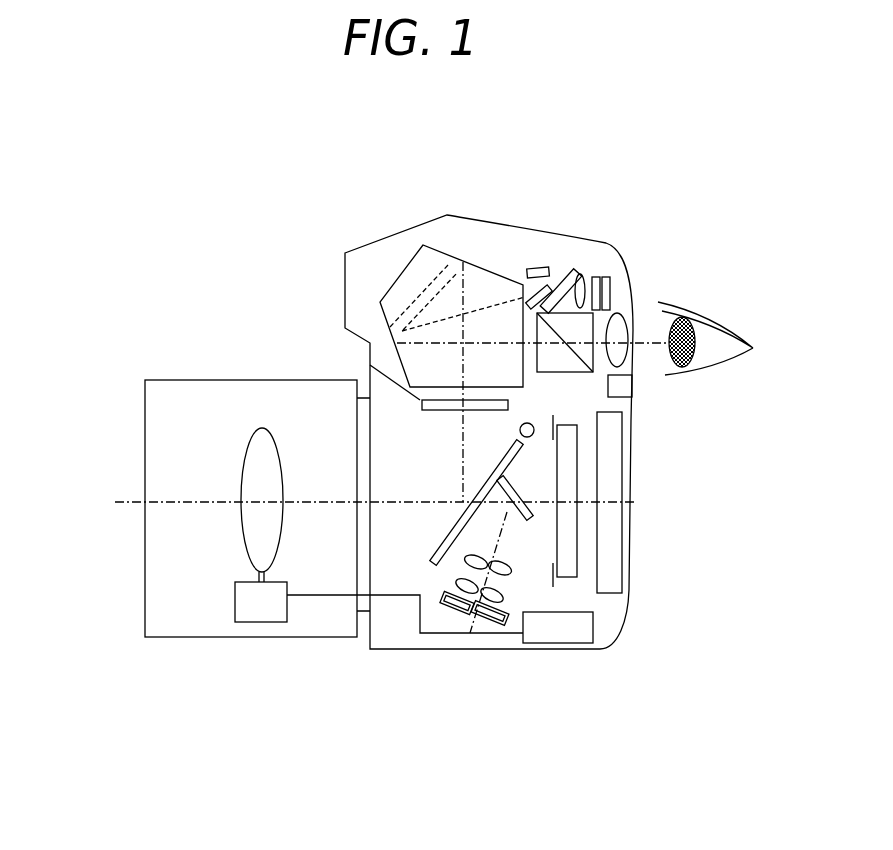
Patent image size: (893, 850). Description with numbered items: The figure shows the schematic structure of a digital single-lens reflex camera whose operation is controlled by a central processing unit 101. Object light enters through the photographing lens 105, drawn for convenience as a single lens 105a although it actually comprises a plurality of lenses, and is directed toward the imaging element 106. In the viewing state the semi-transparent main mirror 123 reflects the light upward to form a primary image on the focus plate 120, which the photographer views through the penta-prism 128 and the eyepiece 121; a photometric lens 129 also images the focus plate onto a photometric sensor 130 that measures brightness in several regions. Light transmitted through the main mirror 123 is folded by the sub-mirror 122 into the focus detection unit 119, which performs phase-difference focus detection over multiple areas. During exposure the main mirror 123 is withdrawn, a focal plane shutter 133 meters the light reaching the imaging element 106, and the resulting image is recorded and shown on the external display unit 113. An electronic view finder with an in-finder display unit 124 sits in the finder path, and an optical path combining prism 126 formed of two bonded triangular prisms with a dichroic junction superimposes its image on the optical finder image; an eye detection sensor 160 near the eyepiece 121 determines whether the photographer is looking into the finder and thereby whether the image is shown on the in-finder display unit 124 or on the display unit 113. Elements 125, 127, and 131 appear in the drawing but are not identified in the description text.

The central processing unit 101 is at (567, 630).
The photographing lens 105 is at (207, 380).
The single lens 105a is at (262, 464).
The imaging element 106 is at (567, 537).
The display unit 113 is at (612, 522).
The focus detection unit 119 is at (482, 633).
The focus plate 120 is at (370, 367).
The eyepiece 121 is at (637, 317).
The sub-mirror 122 is at (530, 510).
The main mirror 123 is at (448, 630).
The in-finder display unit 124 is at (613, 292).
The relay lens 125 is at (580, 277).
The optical path combining prism 126 is at (590, 372).
The mirror 127 is at (567, 273).
The penta-prism 128 is at (392, 283).
The photometric lens 129 is at (528, 287).
The photometric sensor 130 is at (537, 268).
The lens drive unit 131 is at (257, 608).
The focal plane shutter 133 is at (560, 583).
The eye detection sensor 160 is at (626, 385).